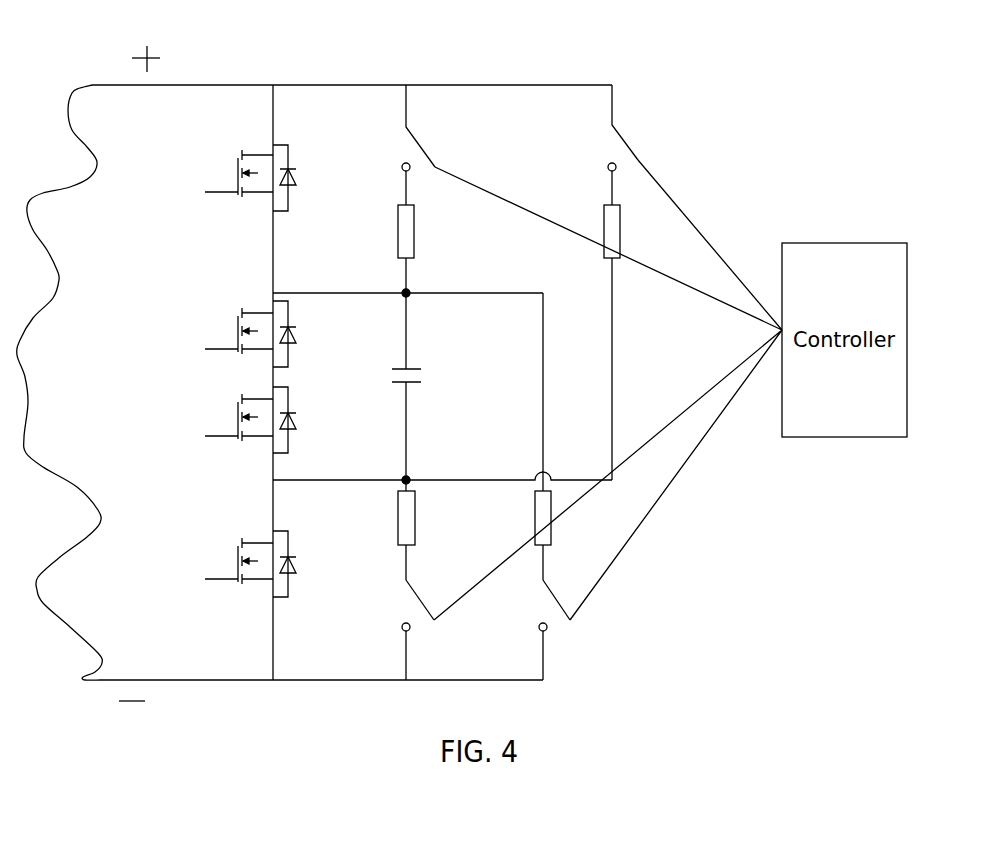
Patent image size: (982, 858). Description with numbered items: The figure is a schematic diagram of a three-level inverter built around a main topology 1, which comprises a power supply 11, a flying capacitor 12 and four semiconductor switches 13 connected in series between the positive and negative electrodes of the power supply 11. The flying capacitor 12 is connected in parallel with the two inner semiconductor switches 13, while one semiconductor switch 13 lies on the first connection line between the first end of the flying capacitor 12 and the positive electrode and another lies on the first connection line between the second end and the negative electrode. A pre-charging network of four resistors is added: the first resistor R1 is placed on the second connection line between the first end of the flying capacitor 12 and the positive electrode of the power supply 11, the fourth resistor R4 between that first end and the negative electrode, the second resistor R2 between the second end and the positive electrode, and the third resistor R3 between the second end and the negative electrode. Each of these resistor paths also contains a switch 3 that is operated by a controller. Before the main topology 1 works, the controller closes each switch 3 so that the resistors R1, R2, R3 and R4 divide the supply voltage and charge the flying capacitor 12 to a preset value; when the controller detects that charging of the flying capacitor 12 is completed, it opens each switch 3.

The main topology 1 is at (60, 382).
The power supply 11 is at (131, 62).
The flying capacitor 12 is at (387, 386).
The semiconductor switch 13 is at (246, 371).
The switch 3 is at (505, 382).
The first resistor R1 is at (388, 232).
The second resistor R2 is at (594, 325).
The third resistor R3 is at (389, 530).
The fourth resistor R4 is at (525, 535).